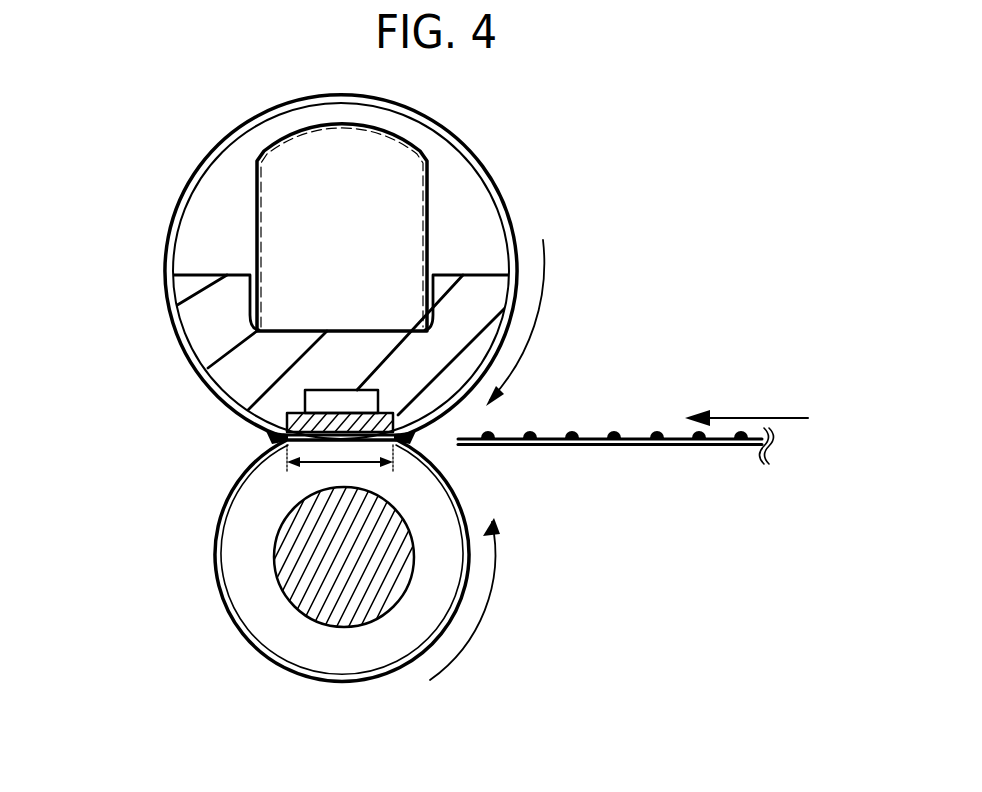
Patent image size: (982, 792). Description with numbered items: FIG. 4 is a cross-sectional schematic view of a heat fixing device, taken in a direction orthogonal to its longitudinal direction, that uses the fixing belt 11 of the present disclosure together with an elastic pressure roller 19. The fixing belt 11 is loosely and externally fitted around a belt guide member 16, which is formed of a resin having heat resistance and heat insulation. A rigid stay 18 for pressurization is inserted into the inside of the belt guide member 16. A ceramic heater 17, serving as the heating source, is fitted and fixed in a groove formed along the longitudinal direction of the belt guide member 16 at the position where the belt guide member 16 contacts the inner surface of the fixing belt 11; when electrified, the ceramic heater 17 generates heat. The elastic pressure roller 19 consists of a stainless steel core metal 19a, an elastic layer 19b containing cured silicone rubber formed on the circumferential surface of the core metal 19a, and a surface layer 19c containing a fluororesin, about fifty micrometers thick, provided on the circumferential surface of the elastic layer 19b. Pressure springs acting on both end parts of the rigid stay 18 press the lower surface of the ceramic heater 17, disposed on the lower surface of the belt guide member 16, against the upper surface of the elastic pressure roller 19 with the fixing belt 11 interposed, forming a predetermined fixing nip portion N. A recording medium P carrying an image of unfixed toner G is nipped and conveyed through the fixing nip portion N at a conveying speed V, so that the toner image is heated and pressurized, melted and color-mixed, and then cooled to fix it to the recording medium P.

The fixing belt 11 is at (233, 138).
The belt guide member 16 is at (480, 277).
The ceramic heater 17 is at (292, 421).
The rigid stay 18 is at (257, 236).
The elastic pressure roller 19 is at (266, 560).
The core metal 19a is at (285, 540).
The elastic layer 19b is at (240, 566).
The surface layer 19c is at (218, 590).
The fixing nip portion N is at (312, 466).
The recording medium P is at (645, 446).
The unfixed toner G is at (572, 431).
The conveying speed V is at (746, 406).